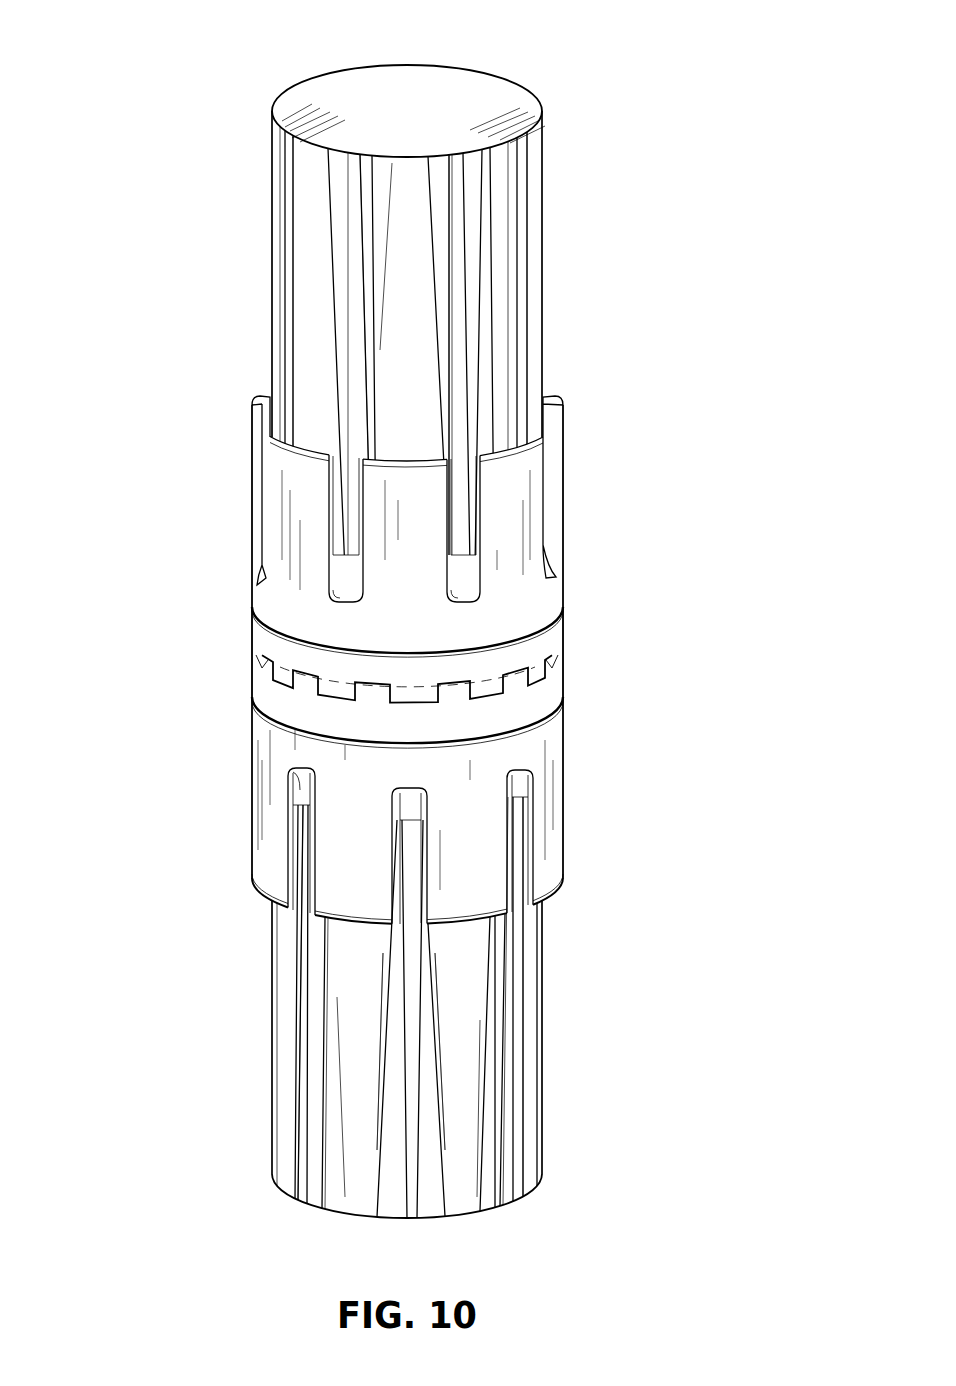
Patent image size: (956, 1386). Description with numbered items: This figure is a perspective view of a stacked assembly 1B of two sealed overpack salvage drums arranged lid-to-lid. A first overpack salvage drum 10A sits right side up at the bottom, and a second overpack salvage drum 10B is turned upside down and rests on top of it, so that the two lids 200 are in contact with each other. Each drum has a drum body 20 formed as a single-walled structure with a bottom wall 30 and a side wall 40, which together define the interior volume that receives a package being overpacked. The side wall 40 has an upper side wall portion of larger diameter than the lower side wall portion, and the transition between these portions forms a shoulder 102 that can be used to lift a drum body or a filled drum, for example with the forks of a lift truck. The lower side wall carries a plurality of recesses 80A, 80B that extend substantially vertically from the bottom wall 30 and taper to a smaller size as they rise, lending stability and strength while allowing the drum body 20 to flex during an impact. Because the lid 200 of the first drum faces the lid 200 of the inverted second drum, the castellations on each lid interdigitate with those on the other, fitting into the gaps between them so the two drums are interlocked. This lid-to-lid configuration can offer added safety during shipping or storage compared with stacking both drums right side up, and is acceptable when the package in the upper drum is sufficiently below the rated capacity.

The stacked assembly 1B is at (108, 574).
The first overpack salvage drum 10A is at (588, 947).
The second overpack salvage drum 10B is at (580, 268).
The drum body 20 is at (286, 517).
The bottom wall 30 is at (431, 88).
The side wall 40 is at (502, 174).
The lower side wall recess 80A is at (372, 203).
The lower side wall recess 80B is at (337, 170).
The shoulder 102 is at (548, 400).
The lid 200 is at (548, 633).